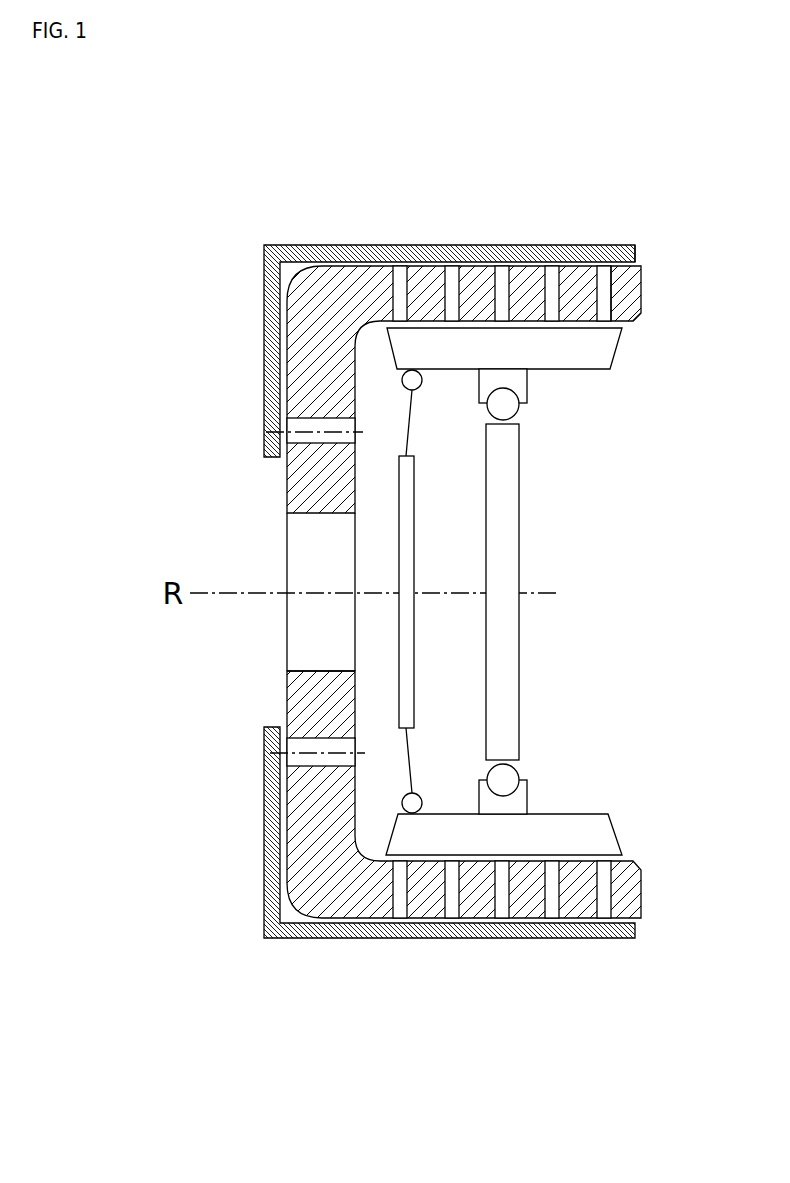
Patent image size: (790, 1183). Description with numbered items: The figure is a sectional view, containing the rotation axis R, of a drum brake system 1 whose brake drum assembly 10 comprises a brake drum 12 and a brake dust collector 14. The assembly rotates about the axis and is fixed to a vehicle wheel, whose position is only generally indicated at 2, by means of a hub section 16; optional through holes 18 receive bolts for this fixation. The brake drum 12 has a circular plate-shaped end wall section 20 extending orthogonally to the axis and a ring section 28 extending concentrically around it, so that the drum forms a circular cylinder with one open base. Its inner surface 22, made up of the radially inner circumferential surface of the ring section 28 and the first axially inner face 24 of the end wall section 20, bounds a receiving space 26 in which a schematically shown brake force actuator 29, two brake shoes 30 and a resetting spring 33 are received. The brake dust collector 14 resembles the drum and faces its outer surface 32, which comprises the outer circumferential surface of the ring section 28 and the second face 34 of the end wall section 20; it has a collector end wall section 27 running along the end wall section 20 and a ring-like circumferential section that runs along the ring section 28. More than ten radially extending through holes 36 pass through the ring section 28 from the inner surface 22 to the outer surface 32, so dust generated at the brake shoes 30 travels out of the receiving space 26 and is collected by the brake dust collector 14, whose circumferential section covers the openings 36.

The drum brake system 1 is at (540, 188).
The vehicle wheel 2 is at (213, 562).
The brake drum assembly 10 is at (386, 185).
The brake drum 12 is at (632, 277).
The brake dust collector 14 is at (265, 313).
The hub section 16 is at (262, 548).
The through holes 18 is at (300, 427).
The end wall section 20 is at (287, 697).
The inner surface 22 is at (628, 862).
The first axially inner face 24 is at (355, 708).
The receiving space 26 is at (558, 560).
The collector end wall section 27 is at (265, 262).
The ring section 28 is at (632, 315).
The brake force actuator 29 is at (508, 707).
The brake shoes 30 is at (567, 358).
The outer surface 32 is at (640, 262).
The resetting spring 33 is at (407, 613).
The second face 34 is at (288, 476).
The through holes 36 is at (620, 297).